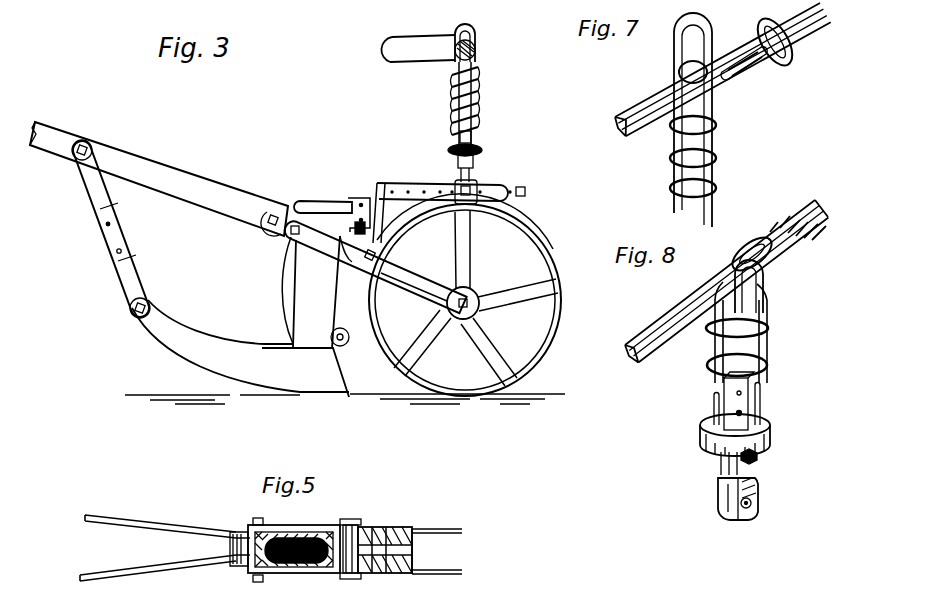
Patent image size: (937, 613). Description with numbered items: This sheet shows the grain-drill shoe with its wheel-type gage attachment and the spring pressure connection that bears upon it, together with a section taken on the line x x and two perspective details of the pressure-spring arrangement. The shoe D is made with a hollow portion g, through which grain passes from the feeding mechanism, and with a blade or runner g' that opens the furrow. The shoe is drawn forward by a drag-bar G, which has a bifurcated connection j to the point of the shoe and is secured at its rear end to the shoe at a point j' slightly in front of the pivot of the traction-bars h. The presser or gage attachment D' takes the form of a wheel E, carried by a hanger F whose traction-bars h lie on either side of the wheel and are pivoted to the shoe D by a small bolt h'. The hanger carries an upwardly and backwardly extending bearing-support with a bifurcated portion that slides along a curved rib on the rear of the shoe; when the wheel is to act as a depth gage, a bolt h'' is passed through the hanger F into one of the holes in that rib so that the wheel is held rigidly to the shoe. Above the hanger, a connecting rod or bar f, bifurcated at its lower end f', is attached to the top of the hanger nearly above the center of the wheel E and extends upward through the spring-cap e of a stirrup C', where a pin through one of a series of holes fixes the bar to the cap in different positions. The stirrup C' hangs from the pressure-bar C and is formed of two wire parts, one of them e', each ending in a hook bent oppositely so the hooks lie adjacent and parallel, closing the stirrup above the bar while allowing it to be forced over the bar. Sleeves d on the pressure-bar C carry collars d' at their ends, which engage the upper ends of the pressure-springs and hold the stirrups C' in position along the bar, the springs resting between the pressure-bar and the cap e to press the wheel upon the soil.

In FIG. 3, the bifurcated connection j is at (111, 229).
In FIG. 5, the bifurcated connection j is at (241, 543).
In FIG. 3, the attachment point j' is at (268, 207).
In FIG. 3, the drag-bar G is at (162, 213).
In FIG. 3, the shoe D is at (248, 317).
In FIG. 3, the presser or gage attachment D' is at (370, 382).
In FIG. 3, the hollow portion g is at (322, 292).
In FIG. 5, the hollow portion g is at (296, 528).
In FIG. 3, the blade or runner g' is at (240, 350).
In FIG. 3, the traction-bar h is at (376, 267).
In FIG. 5, the traction-bar h is at (294, 555).
In FIG. 3, the small bolt h' is at (279, 263).
In FIG. 5, the small bolt h' is at (245, 592).
In FIG. 3, the bolt h'' is at (360, 209).
In FIG. 5, the bolt h'' is at (350, 564).
In FIG. 3, the wheel E is at (498, 350).
In FIG. 3, the hanger F is at (415, 181).
In FIG. 5, the hanger F is at (420, 530).
In FIG. 8, the pressure-bar C is at (726, 281).
In FIG. 3, the stirrup C' is at (476, 80).
In FIG. 7, the stirrup C' is at (702, 120).
In FIG. 8, the stirrup C' is at (755, 332).
In FIG. 3, the spring-cap e is at (476, 151).
In FIG. 8, the spring-cap e is at (751, 434).
In FIG. 3, the stirrup part e' is at (492, 129).
In FIG. 7, the stirrup part e' is at (726, 167).
In FIG. 8, the stirrup part e' is at (758, 398).
In FIG. 3, the connecting rod or bar f is at (484, 179).
In FIG. 8, the connecting rod or bar f is at (699, 431).
In FIG. 8, the bifurcated end f' is at (713, 499).
In FIG. 7, the sleeve d is at (723, 69).
In FIG. 8, the sleeve d is at (799, 208).
In FIG. 7, the collar or flange d' is at (775, 42).
In FIG. 8, the collar or flange d' is at (752, 242).
In FIG. 3, the section line x is at (283, 207).